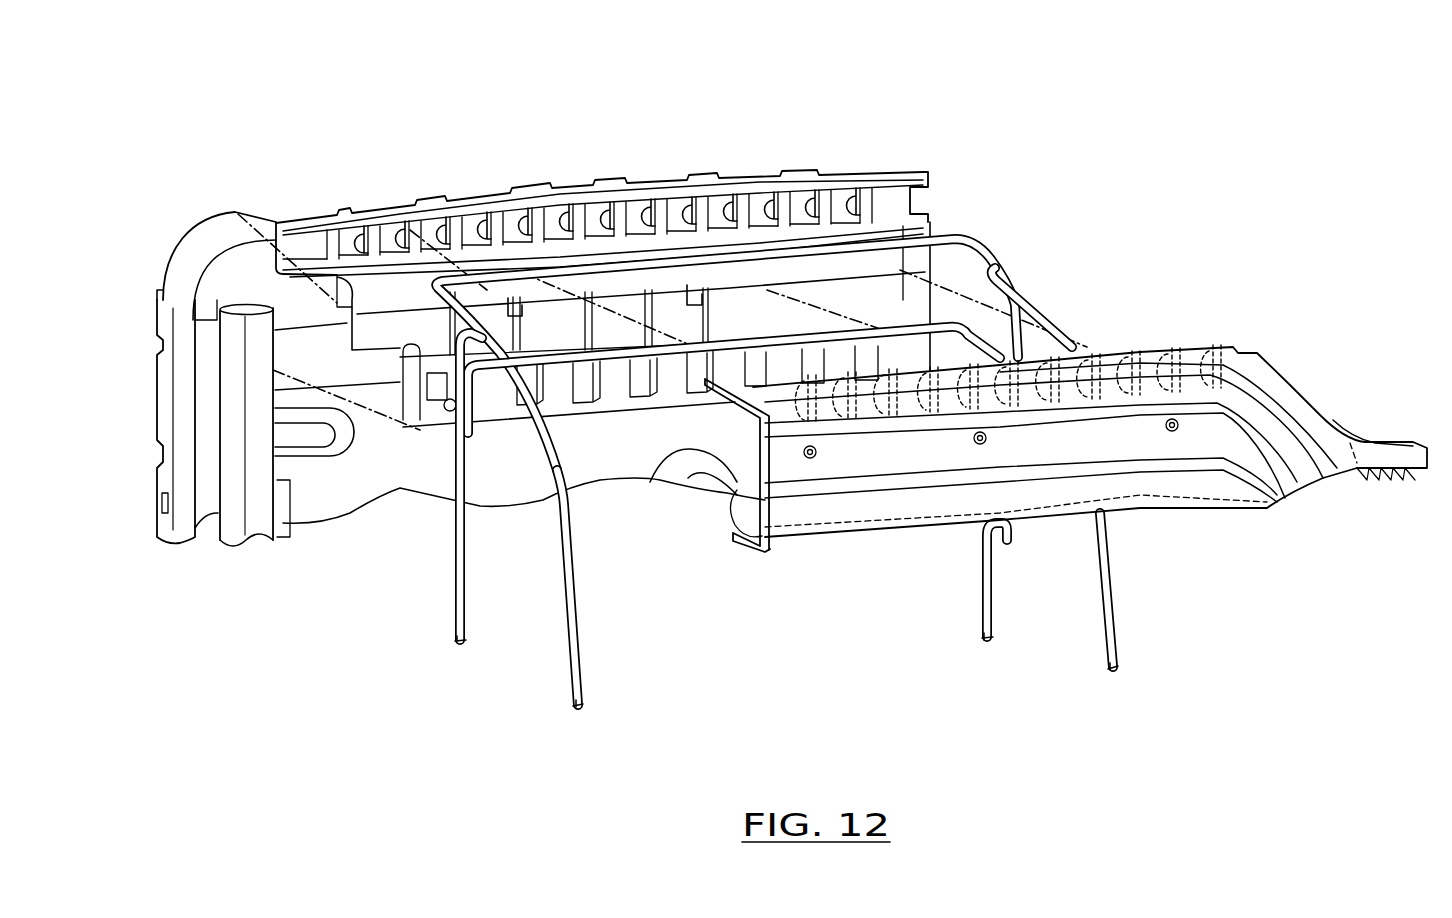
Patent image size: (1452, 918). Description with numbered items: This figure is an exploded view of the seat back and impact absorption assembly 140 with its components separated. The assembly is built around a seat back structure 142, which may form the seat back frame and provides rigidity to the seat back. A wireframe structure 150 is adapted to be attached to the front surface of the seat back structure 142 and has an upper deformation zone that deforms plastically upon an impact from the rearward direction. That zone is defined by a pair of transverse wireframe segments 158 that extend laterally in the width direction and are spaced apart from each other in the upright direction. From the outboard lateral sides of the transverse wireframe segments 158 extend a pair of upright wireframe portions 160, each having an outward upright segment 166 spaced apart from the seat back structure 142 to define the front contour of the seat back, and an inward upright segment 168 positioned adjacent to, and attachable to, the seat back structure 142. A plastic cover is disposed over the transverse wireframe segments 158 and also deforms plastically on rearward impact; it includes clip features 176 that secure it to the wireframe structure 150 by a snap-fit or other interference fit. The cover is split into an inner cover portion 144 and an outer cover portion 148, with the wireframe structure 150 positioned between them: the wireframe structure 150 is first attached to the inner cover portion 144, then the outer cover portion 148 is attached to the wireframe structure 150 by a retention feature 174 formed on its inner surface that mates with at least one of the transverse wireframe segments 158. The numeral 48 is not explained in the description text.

The impact absorption assembly 140 is at (852, 84).
The terminal rail 48 is at (302, 205).
The inner cover portion 144 is at (297, 247).
The seat back structure 142 is at (165, 383).
The clip features 176 is at (850, 208).
The transverse wireframe segments 158 is at (765, 318).
The wireframe structure 150 is at (1023, 283).
The outward upright segment 166 is at (568, 625).
The inward upright segment 168 is at (455, 551).
The upright wireframe portions 160 is at (455, 613).
The outer cover portion 148 is at (1305, 388).
The retention feature 174 is at (1235, 352).